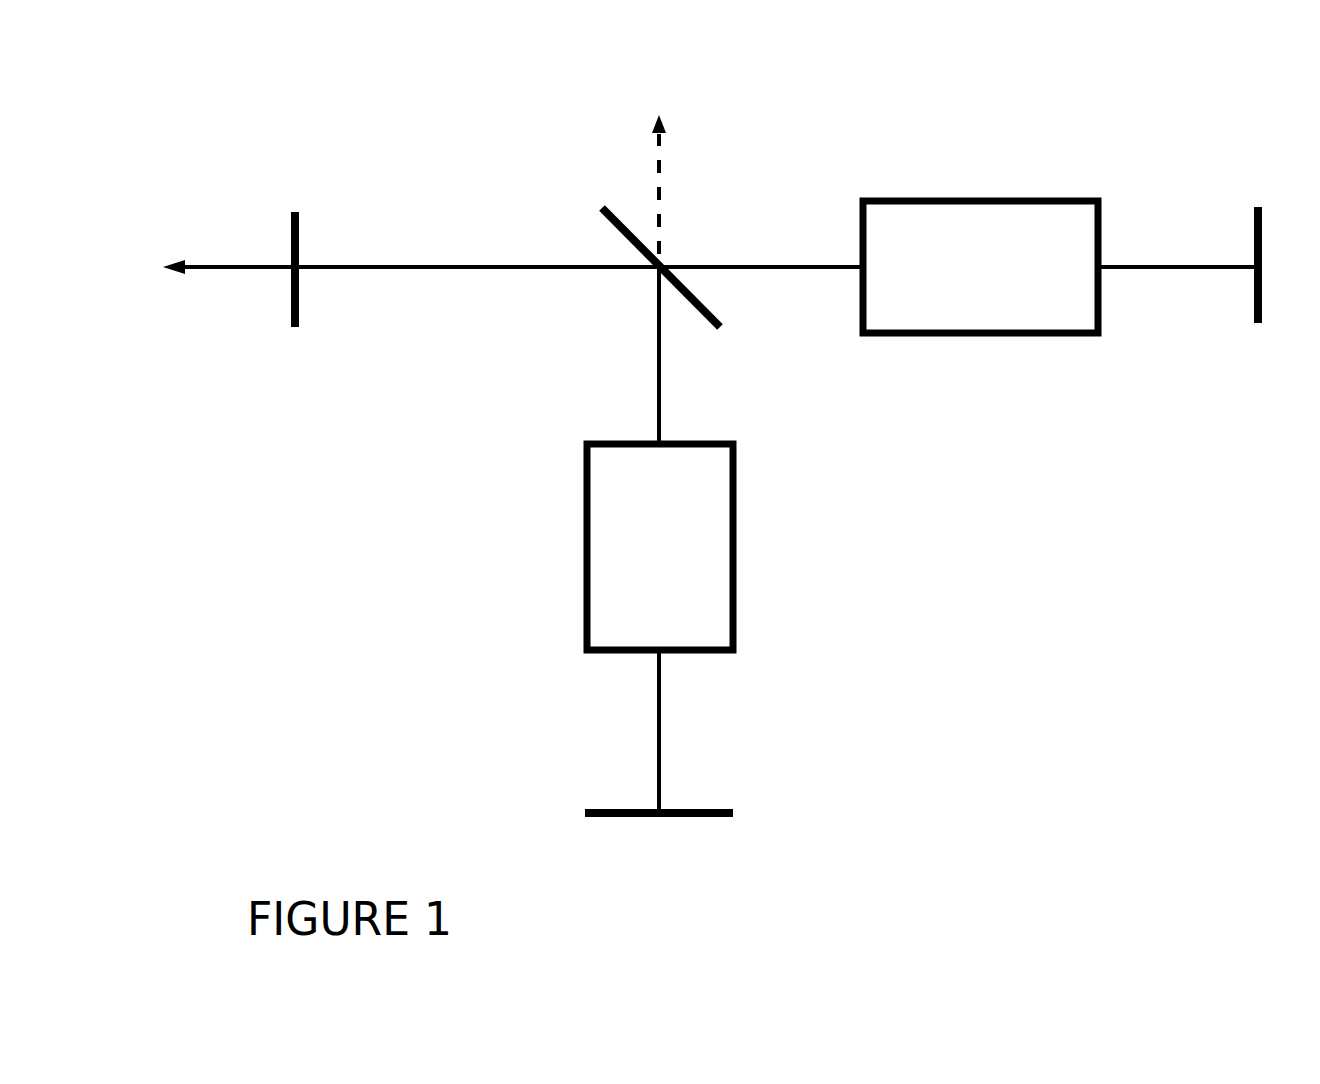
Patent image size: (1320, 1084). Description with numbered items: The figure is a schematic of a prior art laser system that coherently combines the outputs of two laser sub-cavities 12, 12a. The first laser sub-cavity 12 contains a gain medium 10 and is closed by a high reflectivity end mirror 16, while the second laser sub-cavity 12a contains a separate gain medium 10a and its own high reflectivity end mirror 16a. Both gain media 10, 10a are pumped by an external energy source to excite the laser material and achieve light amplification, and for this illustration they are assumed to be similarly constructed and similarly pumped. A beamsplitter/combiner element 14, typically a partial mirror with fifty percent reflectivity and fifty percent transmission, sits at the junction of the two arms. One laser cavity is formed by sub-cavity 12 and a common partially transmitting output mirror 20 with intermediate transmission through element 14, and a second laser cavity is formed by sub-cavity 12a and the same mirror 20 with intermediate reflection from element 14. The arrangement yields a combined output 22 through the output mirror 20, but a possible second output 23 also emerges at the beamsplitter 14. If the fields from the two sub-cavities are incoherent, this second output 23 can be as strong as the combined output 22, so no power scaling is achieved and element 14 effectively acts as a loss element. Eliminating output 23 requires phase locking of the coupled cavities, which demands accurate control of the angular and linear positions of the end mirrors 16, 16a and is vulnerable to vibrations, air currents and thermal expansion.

The gain medium 10 is at (982, 187).
The gain medium 10a is at (570, 570).
The laser sub-cavity 12 is at (1023, 415).
The laser sub-cavity 12a is at (828, 575).
The beamsplitter/combiner element 14 is at (602, 200).
The high reflectivity end mirror 16 is at (1258, 190).
The high reflectivity end mirror 16a is at (570, 798).
The output mirror 20 is at (295, 198).
The combined output 22 is at (193, 247).
The second output 23 is at (675, 187).